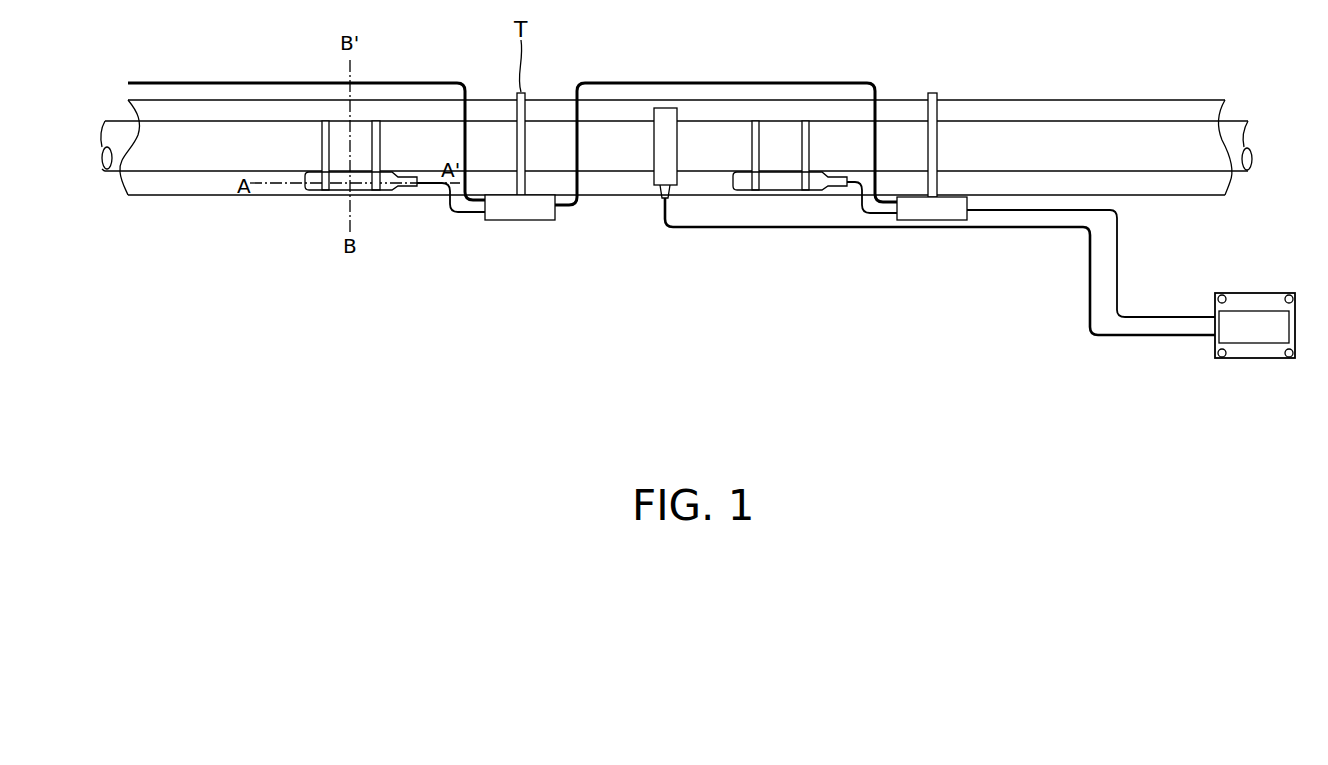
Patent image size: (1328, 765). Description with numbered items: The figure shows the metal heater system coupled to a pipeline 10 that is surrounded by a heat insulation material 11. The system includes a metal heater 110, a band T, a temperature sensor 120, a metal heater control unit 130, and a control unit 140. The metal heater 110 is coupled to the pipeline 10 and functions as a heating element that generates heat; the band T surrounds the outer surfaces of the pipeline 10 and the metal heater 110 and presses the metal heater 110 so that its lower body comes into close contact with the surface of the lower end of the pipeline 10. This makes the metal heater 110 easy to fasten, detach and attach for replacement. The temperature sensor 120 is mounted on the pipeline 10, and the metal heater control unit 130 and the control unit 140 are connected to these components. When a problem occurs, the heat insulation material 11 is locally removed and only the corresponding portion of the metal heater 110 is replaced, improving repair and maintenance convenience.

The pipeline 10 is at (1245, 133).
The heat insulation material 11 is at (1158, 110).
The metal heater 110 is at (373, 192).
The temperature sensor 120 is at (665, 120).
The metal heater control unit 130 is at (510, 210).
The control unit 140 is at (1250, 352).